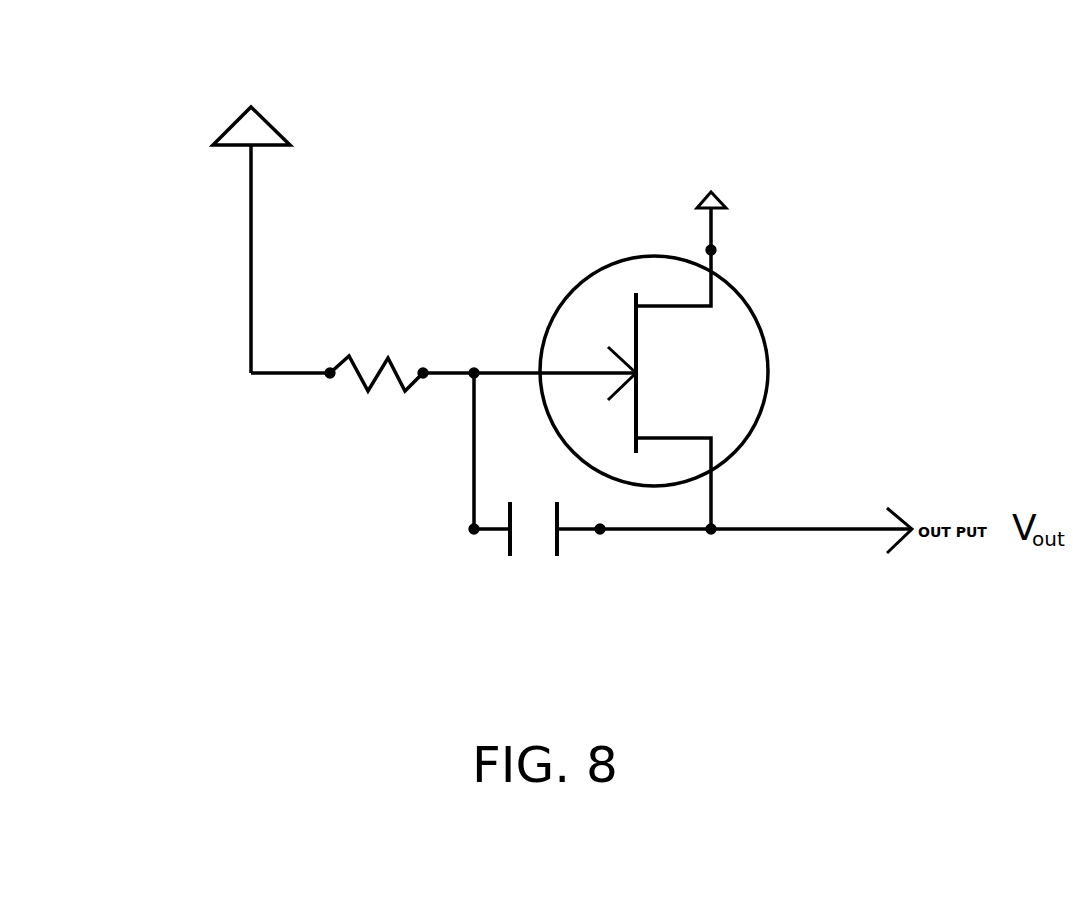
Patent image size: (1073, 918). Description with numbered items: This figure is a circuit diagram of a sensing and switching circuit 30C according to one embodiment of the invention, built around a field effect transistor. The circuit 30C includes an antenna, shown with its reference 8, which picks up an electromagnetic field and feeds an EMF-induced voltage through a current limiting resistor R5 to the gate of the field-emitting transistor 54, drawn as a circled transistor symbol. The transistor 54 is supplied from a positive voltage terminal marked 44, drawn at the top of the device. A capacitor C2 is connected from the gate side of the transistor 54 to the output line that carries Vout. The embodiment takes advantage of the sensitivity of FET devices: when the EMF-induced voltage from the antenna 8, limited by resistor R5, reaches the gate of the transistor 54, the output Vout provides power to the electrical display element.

The antenna 8 is at (270, 103).
The current limiting resistor R5 is at (385, 360).
The field-emitting transistor (FET) 54 is at (745, 298).
The supply voltage terminal 44 is at (724, 180).
The capacitor C2 is at (537, 493).
The circuit 30C is at (850, 133).